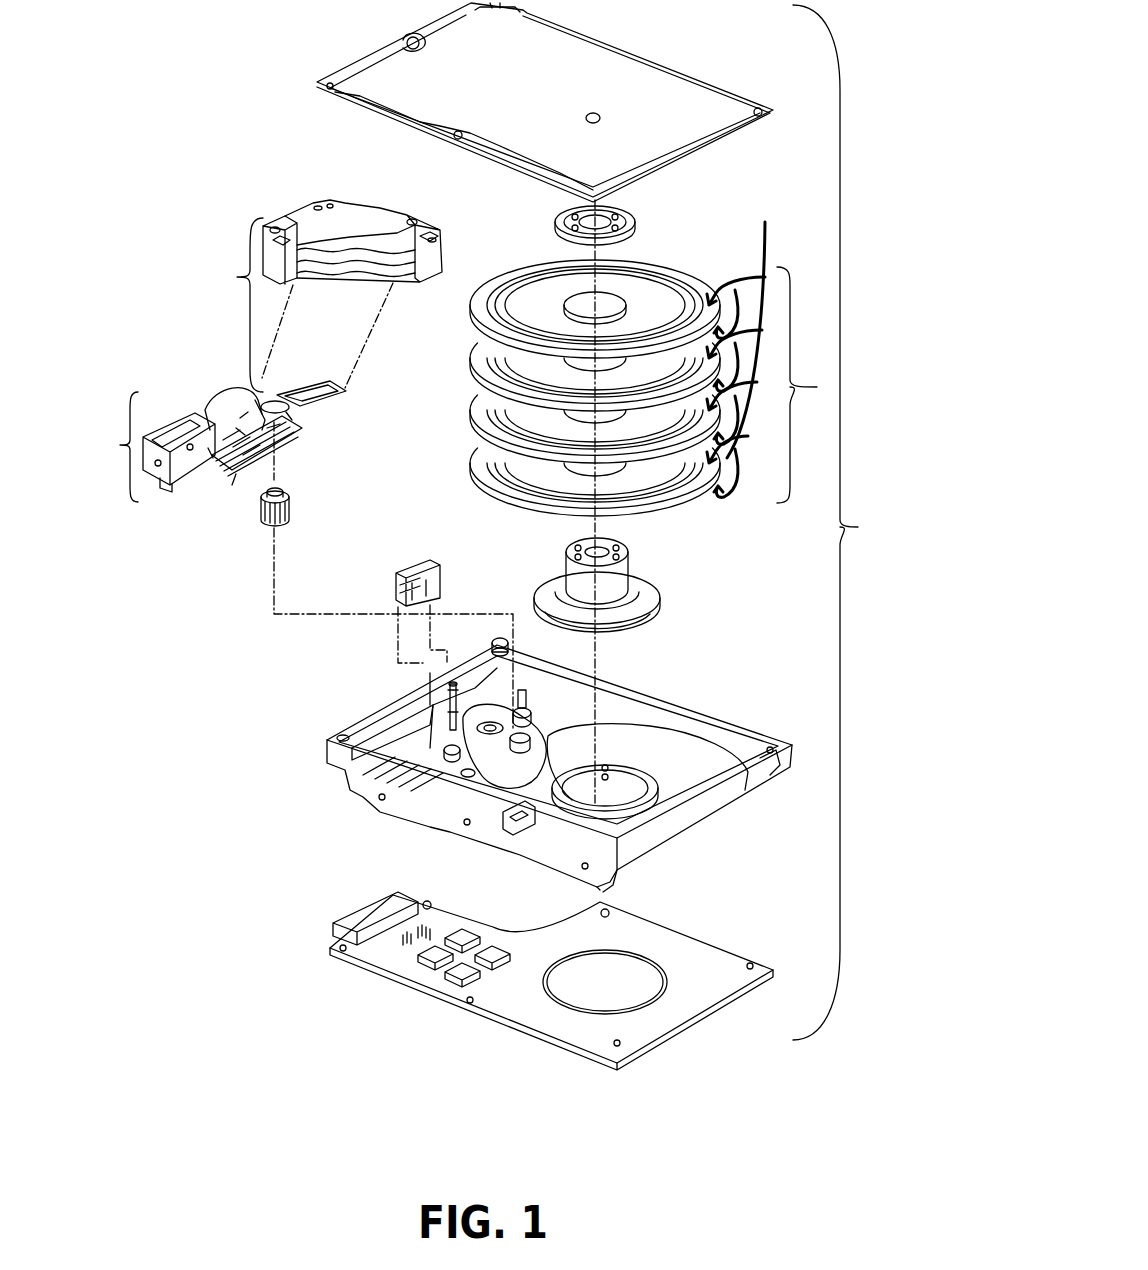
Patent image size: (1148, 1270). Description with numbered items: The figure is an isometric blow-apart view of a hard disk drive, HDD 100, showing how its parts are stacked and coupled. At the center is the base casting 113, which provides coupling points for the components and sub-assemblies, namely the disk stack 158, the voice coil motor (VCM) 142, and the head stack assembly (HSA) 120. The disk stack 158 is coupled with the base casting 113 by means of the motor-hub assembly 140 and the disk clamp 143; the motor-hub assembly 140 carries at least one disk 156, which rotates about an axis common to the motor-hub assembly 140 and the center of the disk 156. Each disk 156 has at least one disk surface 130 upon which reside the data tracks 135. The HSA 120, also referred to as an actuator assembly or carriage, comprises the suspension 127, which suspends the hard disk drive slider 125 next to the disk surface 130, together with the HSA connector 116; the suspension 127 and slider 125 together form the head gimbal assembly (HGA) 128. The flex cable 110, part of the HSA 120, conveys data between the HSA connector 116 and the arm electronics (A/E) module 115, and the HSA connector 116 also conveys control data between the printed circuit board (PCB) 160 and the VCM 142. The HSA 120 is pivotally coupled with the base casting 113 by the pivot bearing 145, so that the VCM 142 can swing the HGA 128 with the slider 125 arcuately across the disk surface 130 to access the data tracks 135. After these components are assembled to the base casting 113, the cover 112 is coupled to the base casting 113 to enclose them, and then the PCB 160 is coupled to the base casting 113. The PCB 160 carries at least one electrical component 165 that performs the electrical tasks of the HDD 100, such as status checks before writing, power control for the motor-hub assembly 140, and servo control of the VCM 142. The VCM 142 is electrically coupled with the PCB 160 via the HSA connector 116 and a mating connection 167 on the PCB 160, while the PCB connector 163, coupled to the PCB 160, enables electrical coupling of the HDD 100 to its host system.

The HDD 100 is at (858, 527).
The flex cable 110 is at (243, 402).
The cover 112 is at (618, 85).
The base casting 113 is at (343, 755).
The arm electronics (A/E) module 115 is at (247, 410).
The HSA connector 116 is at (170, 487).
The head stack assembly (HSA) 120 is at (292, 455).
The hard disk drive slider 125 is at (210, 480).
The suspension 127 is at (258, 418).
The head gimbal assembly (HGA) 128 is at (247, 482).
The disk surface 130 is at (746, 344).
The data tracks 135 is at (523, 280).
The motor-hub assembly 140 is at (627, 604).
The voice coil motor (VCM) 142 is at (237, 277).
The disk clamp 143 is at (567, 228).
The pivot bearing 145 is at (267, 527).
The disk 156 is at (467, 465).
The disk stack 158 is at (645, 366).
The printed circuit board (PCB) 160 is at (475, 973).
The PCB connector 163 is at (370, 910).
The electrical component 165 is at (457, 975).
The mating connection 167 is at (403, 942).